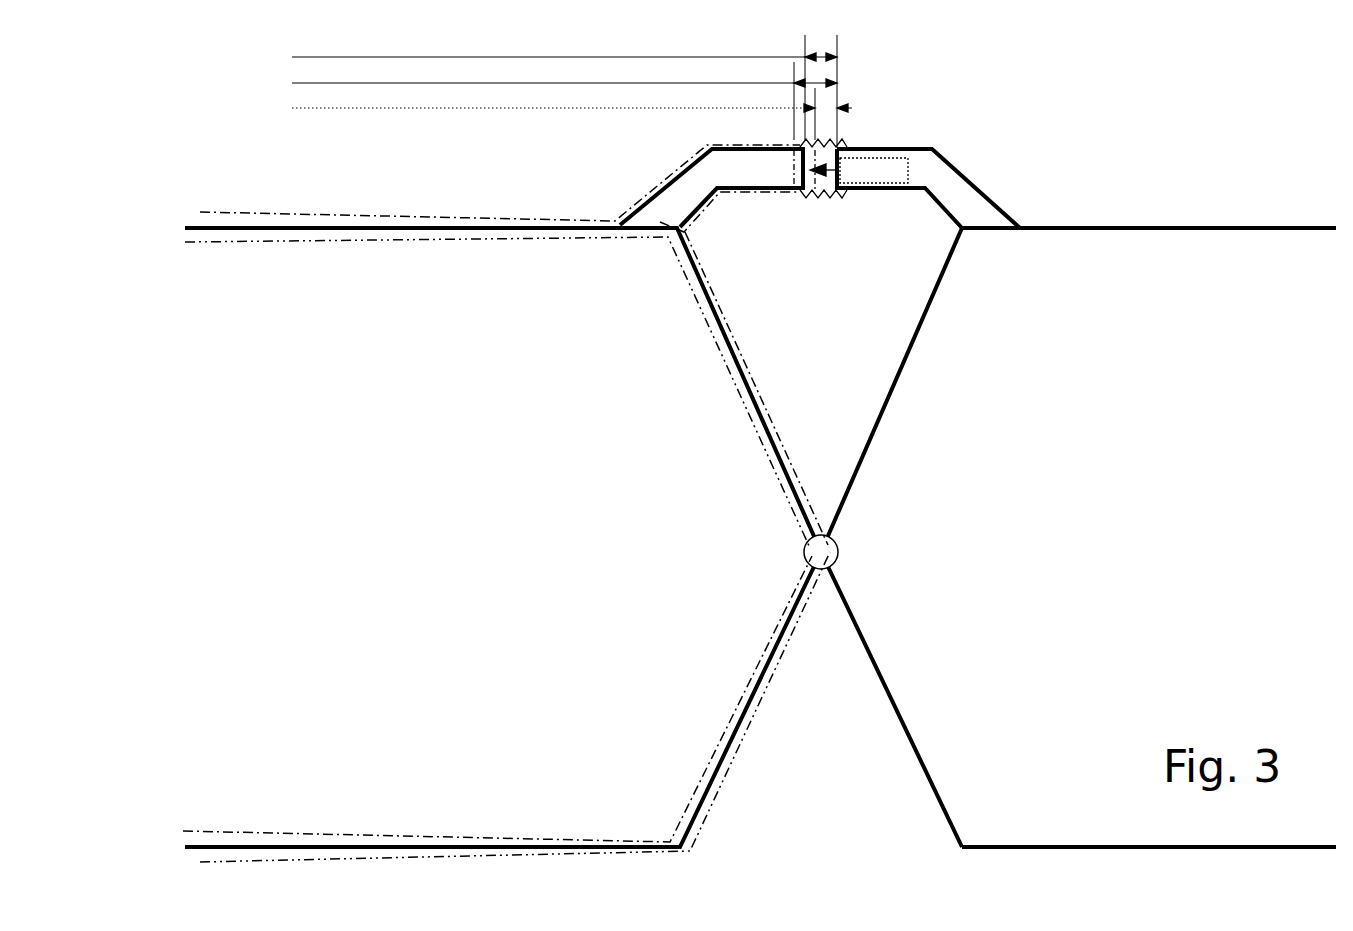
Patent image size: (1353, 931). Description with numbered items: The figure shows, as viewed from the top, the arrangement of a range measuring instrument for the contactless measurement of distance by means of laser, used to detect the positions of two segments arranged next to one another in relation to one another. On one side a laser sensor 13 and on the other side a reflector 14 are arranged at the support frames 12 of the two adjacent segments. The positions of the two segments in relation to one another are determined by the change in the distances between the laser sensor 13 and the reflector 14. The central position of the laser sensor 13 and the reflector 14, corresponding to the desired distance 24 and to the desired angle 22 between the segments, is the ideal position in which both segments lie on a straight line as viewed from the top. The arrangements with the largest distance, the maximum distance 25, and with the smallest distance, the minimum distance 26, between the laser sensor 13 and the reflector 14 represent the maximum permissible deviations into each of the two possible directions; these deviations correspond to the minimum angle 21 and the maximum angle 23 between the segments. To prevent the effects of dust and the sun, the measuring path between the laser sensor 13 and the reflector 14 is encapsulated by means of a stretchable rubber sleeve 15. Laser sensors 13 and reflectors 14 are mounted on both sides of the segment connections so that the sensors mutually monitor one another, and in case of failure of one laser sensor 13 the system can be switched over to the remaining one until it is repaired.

The support frame 12 is at (677, 198).
The laser sensor 13 is at (883, 170).
The reflector 14 is at (807, 158).
The stretchable rubber sleeve 15 is at (840, 145).
The minimum angle 21 is at (505, 493).
The desired angle 22 is at (417, 532).
The maximum angle 23 is at (507, 549).
The desired distance 24 is at (551, 57).
The maximum distance 25 is at (551, 83).
The minimum distance 26 is at (558, 108).